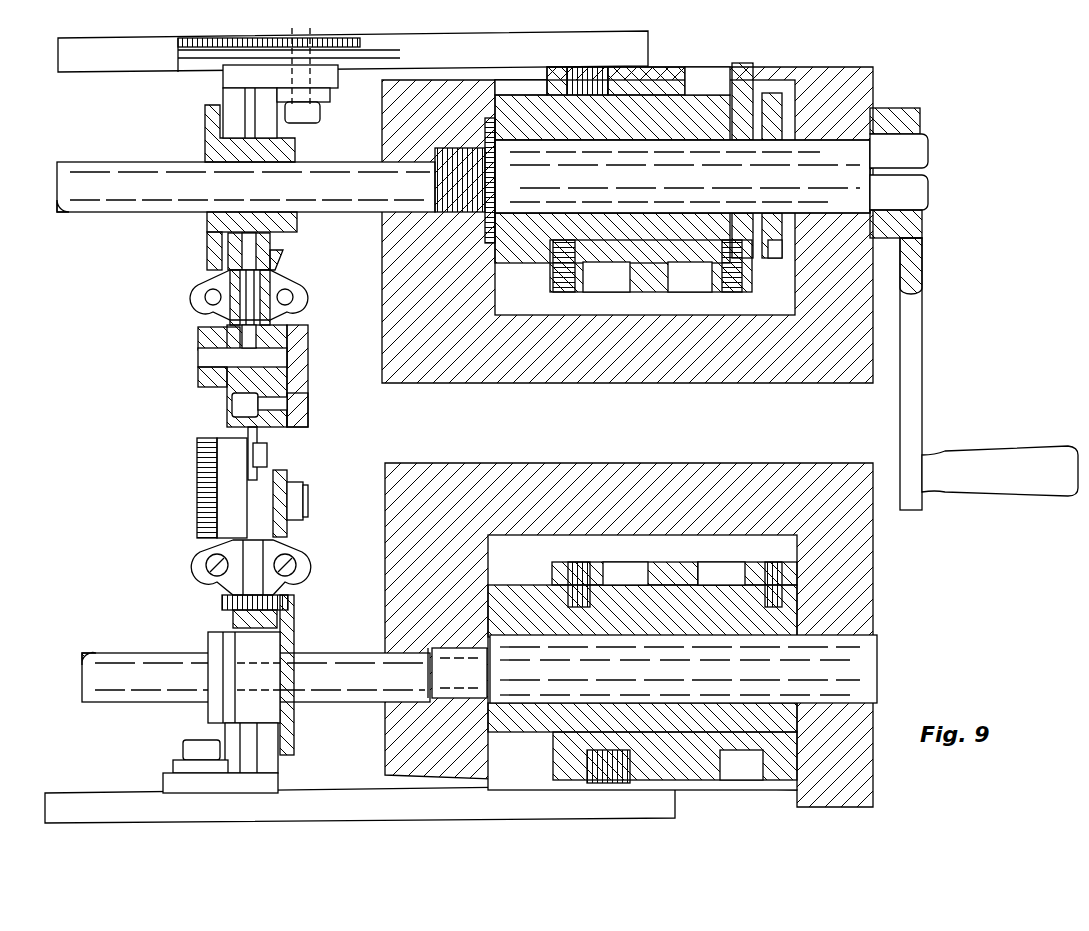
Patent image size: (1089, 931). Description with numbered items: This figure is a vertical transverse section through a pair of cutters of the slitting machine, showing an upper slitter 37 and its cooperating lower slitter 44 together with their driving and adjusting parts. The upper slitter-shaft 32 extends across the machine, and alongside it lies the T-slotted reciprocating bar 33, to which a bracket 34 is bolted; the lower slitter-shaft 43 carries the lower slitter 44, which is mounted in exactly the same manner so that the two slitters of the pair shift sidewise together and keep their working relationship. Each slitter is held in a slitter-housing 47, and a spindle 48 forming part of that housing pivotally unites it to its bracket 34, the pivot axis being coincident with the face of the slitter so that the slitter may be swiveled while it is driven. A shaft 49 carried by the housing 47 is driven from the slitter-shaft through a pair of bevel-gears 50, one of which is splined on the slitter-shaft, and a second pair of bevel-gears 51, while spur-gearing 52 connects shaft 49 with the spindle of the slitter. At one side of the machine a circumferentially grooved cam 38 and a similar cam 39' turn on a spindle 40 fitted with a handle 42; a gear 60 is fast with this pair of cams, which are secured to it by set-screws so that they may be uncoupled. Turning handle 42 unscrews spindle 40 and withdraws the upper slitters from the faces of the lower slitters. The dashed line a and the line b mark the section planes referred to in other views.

The upper slitter-shaft 32 is at (98, 212).
The bar 33 is at (132, 62).
The brackets 34 is at (230, 118).
The upper slitters 37 is at (240, 393).
The circumferentially grooved cam 38 is at (610, 262).
The cam 39' is at (725, 275).
The spindle 40 is at (670, 150).
The handle 42 is at (925, 322).
The lower slitter-shaft 43 is at (320, 668).
The lower slitters 44 is at (610, 180).
The slitter-housing 47 is at (300, 372).
The spindle 48 is at (230, 282).
The shaft 49 is at (308, 332).
The pair of bevel-gears 50 is at (207, 225).
The pair of bevel-gears 51 is at (205, 333).
The spur-gearing 52 is at (308, 412).
The gear 60 is at (505, 85).
The line a is at (352, 125).
The line b is at (480, 358).